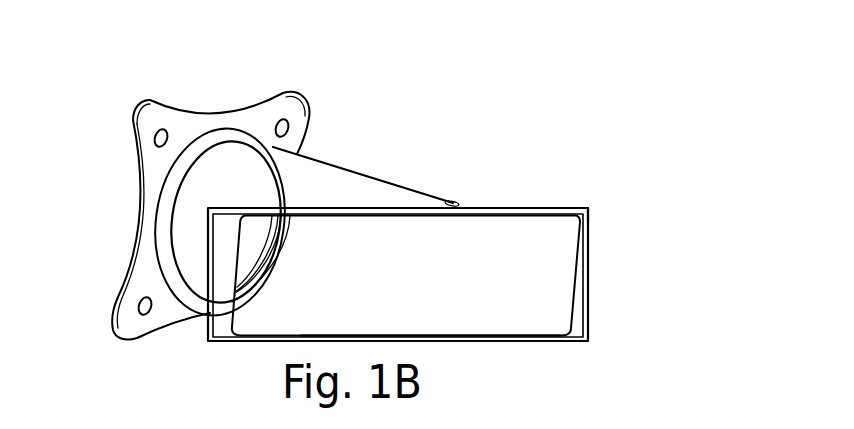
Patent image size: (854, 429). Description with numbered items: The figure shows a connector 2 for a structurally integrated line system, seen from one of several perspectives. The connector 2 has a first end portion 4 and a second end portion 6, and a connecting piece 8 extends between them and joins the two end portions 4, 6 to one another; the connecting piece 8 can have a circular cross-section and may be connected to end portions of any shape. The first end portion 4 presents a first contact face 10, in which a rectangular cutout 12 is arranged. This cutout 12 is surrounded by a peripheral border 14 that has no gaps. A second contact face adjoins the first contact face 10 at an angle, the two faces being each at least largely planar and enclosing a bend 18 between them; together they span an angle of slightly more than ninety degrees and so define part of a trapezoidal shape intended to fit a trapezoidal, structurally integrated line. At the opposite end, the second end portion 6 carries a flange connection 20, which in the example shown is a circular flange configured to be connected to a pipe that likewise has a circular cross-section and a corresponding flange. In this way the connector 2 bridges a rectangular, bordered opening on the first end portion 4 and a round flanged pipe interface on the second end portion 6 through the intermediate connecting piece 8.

The connector 2 is at (382, 158).
The first end portion 4 is at (532, 191).
The second end portion 6 is at (138, 359).
The connecting piece 8 is at (318, 180).
The first contact face 10 is at (597, 263).
The rectangular cutout 12 is at (543, 320).
The peripheral border 14 is at (580, 297).
The bend 18 is at (599, 206).
The flange connection 20 is at (157, 120).